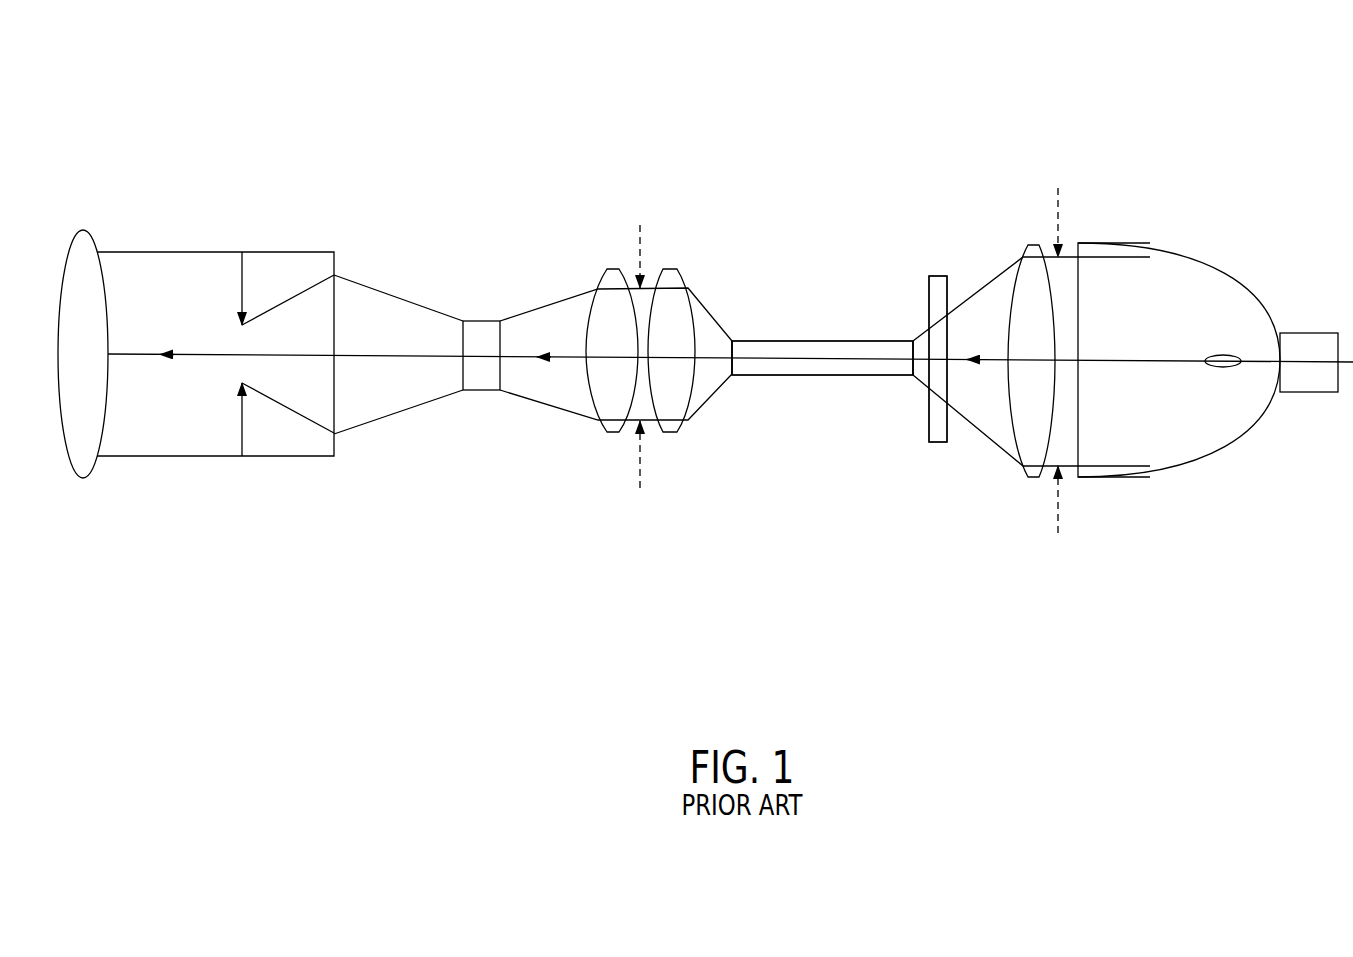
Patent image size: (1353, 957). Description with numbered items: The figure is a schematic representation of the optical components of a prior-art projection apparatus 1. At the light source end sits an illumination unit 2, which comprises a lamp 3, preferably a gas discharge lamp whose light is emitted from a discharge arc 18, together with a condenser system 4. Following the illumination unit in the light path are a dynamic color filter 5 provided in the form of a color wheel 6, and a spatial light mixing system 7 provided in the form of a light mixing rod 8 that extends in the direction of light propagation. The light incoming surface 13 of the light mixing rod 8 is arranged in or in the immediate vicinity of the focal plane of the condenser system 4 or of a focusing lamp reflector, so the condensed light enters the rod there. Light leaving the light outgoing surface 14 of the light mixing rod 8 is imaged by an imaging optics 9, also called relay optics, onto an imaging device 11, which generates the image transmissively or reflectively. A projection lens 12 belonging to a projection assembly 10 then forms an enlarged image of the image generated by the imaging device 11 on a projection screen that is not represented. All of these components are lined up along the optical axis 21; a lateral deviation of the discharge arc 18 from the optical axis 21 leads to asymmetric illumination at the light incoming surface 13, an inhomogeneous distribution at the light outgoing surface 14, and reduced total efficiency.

The projection apparatus 1 is at (947, 103).
The illumination unit 2 is at (1175, 180).
The lamp 3 is at (1205, 267).
The condenser system 4 is at (1033, 243).
The dynamic color filter 5 is at (939, 275).
The color wheel 6 is at (938, 359).
The spatial light mixing system 7 is at (827, 377).
The light mixing rod 8 is at (822, 358).
The imaging optics 9 is at (615, 267).
The projection assembly 10 is at (332, 168).
The imaging device 11 is at (482, 392).
The projection lens 12 is at (93, 237).
The light incoming surface 13 is at (915, 352).
The light outgoing surface 14 is at (733, 350).
The discharge arc 18 is at (1212, 370).
The optical axis 21 is at (370, 353).